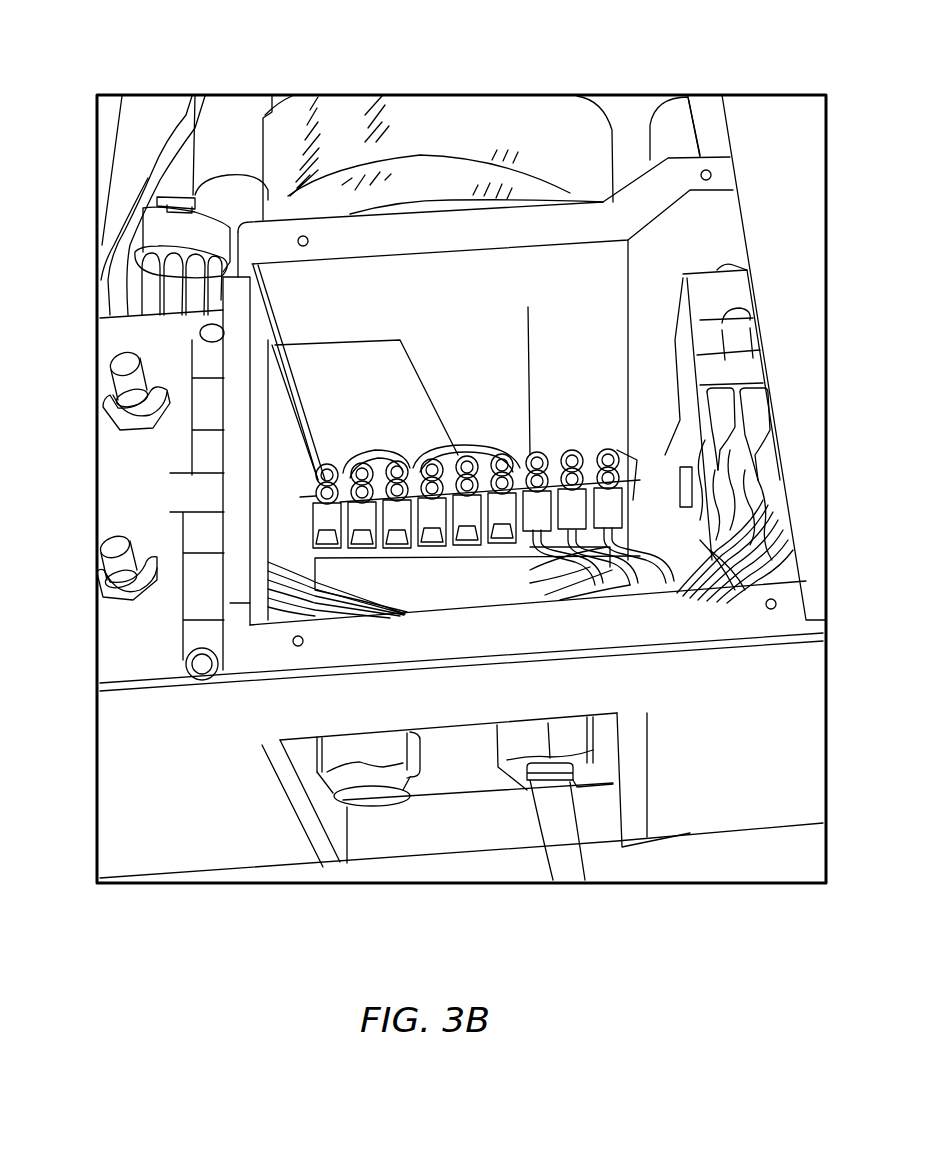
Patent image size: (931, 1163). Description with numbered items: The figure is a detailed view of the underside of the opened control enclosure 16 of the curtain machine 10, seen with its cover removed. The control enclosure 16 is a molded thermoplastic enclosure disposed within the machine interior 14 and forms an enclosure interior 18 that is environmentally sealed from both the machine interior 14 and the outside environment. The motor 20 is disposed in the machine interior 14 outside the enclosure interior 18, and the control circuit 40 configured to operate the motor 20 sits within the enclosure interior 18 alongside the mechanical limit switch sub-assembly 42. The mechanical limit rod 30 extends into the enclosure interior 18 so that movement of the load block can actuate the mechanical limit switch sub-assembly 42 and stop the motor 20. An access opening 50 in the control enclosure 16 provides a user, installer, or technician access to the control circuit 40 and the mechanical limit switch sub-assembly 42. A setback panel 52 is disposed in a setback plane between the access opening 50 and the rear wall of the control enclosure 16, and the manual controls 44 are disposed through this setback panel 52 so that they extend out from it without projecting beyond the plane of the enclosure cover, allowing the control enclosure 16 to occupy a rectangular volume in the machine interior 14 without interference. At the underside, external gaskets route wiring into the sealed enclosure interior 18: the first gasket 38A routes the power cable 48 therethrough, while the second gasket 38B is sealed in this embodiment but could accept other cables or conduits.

The curtain machine 10 is at (797, 187).
The machine interior 14 is at (646, 140).
The control enclosure 16 is at (728, 173).
The enclosure interior 18 is at (470, 337).
The motor 20 is at (298, 116).
The mechanical limit rod 30 is at (743, 340).
The first gasket 38A is at (577, 740).
The second gasket 38B is at (313, 762).
The control circuit 40 is at (397, 556).
The mechanical limit switch sub-assembly 42 is at (753, 373).
The manual controls 44 is at (125, 363).
The power cable 48 is at (563, 833).
The access opening 50 is at (718, 240).
The setback panel 52 is at (122, 488).